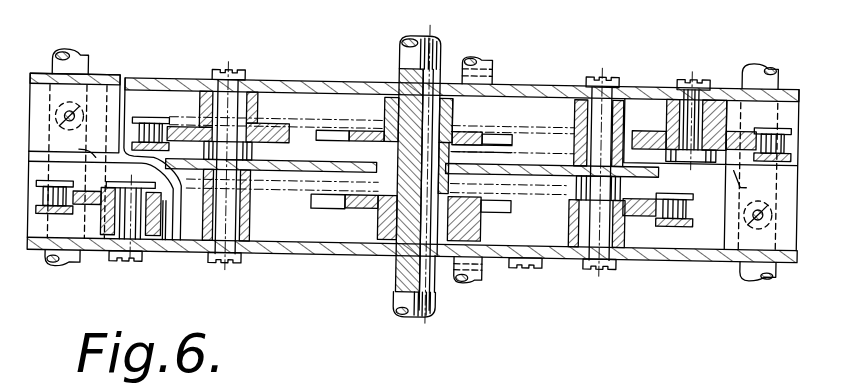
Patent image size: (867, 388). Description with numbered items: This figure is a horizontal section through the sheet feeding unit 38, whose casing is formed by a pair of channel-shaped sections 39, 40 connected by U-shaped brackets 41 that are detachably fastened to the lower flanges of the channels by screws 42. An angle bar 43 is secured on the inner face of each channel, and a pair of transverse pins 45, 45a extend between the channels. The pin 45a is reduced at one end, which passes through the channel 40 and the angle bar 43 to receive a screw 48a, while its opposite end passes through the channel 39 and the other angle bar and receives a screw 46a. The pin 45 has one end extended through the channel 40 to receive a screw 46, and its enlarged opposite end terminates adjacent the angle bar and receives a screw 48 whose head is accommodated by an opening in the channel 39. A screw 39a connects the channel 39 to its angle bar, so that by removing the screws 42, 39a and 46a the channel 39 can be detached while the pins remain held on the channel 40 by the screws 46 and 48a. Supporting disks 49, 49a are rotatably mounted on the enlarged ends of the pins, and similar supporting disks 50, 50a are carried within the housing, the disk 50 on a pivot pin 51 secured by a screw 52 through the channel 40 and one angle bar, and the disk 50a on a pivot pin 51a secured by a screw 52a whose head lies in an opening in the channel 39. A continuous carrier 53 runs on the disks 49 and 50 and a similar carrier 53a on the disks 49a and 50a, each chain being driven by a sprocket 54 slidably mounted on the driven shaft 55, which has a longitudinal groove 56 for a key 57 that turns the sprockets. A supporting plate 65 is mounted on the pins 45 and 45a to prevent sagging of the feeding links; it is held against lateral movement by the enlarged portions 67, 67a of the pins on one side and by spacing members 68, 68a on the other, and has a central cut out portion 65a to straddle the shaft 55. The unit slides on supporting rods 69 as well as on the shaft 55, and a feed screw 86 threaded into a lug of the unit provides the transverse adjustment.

The feeding unit 38 is at (140, 78).
The channel-shaped section 39 is at (313, 252).
The screw 39a is at (528, 258).
The channel-shaped section 40 is at (362, 80).
The U-shaped bracket 41 is at (413, 168).
The screw 42 is at (75, 112).
The angle bar 43 is at (538, 82).
The pin 45 is at (576, 92).
The pin 45a is at (264, 124).
The screw 46 is at (605, 69).
The screw 46a is at (240, 258).
The screw 48 is at (601, 256).
The screw 48a is at (234, 68).
The supporting disk 49 is at (280, 122).
The supporting disk 49a is at (646, 208).
The supporting disk 50 is at (641, 122).
The supporting disk 50a is at (92, 205).
The pivot pin 51 is at (683, 100).
The pivot pin 51a is at (100, 251).
The screw 52 is at (708, 72).
The screw 52a is at (140, 252).
The continuous carrier 53 is at (148, 117).
The continuous carrier 53a is at (52, 215).
The sprocket 54 is at (352, 130).
The driven shaft 55 is at (421, 31).
The groove 56 is at (430, 287).
The key 57 is at (433, 268).
The supporting plate 65 is at (662, 166).
The cut out portion 65a is at (392, 170).
The enlarged portion 67 is at (214, 145).
The enlarged portion 67a is at (632, 196).
The spacing member 68 is at (578, 115).
The spacing member 68a is at (254, 232).
The supporting rod 69 is at (74, 53).
The feed screw 86 is at (490, 54).